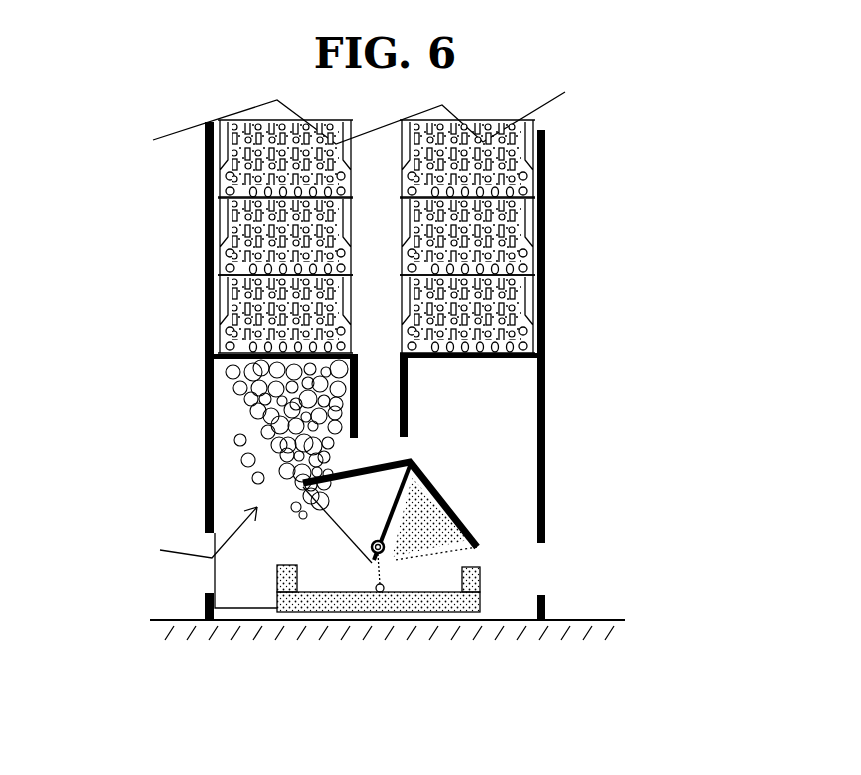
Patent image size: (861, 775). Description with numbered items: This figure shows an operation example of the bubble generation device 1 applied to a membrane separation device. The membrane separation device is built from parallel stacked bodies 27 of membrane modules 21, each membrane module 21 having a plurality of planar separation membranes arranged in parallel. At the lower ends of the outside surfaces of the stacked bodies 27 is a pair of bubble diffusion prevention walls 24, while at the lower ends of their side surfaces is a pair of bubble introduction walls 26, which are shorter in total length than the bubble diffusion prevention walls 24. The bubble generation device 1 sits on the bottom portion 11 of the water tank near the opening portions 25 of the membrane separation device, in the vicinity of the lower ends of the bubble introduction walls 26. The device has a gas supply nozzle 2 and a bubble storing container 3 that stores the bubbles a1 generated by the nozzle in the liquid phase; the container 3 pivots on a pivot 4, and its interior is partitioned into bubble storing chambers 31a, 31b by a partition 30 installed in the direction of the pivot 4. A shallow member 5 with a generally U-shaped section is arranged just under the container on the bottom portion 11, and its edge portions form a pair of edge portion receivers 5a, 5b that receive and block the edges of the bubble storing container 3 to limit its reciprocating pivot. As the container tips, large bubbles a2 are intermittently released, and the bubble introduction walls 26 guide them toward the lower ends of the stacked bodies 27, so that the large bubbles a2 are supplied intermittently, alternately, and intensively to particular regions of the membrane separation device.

The bubble generation device 1 is at (478, 504).
The gas supply nozzle 2 is at (376, 588).
The bubble storing container 3 is at (424, 568).
The pivot 4 is at (374, 543).
The shallow member 5 is at (390, 630).
The edge portion receiver 5a is at (277, 590).
The edge portion receiver 5b is at (482, 598).
The bottom portion 11 is at (602, 622).
The membrane module 21 is at (247, 158).
The bubble diffusion prevention wall 24 is at (208, 393).
The opening portion 25 is at (207, 566).
The bubble introduction wall 26 is at (360, 412).
The parallel stacked body 27 is at (376, 236).
The partition 30 is at (403, 487).
The bubble storing chamber 31a is at (333, 508).
The bubble storing chamber 31b is at (478, 542).
The bubbles a1 is at (417, 553).
The large bubbles a2 is at (245, 437).